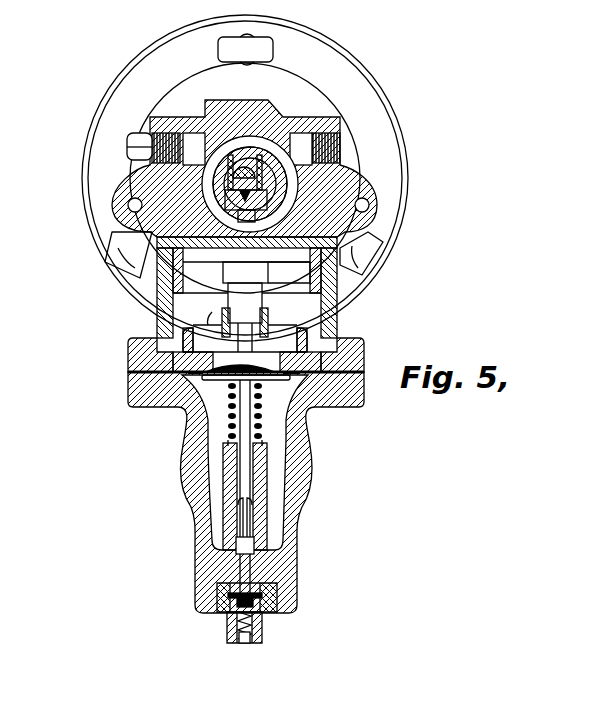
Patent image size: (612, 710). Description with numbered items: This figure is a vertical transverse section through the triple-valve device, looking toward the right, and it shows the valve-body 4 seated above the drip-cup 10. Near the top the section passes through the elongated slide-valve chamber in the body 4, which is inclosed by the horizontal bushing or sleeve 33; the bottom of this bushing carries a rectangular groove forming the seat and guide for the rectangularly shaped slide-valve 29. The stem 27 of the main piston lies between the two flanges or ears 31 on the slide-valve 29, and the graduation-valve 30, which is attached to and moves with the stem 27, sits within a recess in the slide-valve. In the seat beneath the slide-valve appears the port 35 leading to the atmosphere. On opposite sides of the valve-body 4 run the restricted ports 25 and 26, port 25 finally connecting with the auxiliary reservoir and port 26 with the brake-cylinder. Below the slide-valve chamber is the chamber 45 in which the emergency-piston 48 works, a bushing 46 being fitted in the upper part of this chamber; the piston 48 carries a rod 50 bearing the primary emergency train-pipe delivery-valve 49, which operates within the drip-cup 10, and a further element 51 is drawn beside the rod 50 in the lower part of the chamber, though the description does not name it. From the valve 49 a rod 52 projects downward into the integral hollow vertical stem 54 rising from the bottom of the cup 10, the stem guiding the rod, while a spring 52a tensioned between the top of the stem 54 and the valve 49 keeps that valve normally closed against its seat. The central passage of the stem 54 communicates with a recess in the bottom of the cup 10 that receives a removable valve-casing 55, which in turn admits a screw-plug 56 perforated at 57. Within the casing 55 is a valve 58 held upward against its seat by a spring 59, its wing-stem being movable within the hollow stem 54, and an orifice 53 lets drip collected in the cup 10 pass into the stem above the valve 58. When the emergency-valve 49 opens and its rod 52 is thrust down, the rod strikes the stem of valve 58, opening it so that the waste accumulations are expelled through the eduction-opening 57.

The body 4 is at (335, 320).
The drip-cup 10 is at (298, 519).
The port 25 is at (135, 208).
The port 26 is at (364, 205).
The stem of the main piston 27 is at (245, 172).
The slide-valve 29 is at (330, 150).
The graduation-valve 30 is at (285, 152).
The flanges or ears 31 is at (262, 160).
The bushing or sleeve 33 is at (277, 182).
The port 35 is at (163, 248).
The chamber 45 is at (291, 322).
The bushing 46 is at (311, 270).
The emergency-piston 48 is at (248, 250).
The primary emergency train-pipe delivery-valve 49 is at (223, 378).
The rod 50 is at (245, 317).
The chamber compartment 51 is at (222, 318).
The rod 52 is at (250, 402).
The spring 52a is at (231, 413).
The orifice 53 is at (256, 547).
The hollow vertical stem 54 is at (262, 471).
The removable valve-casing 55 is at (273, 586).
The screw-plug 56 is at (263, 637).
The perforation or eduction-opening 57 is at (247, 643).
The valve 58 is at (218, 606).
The spring 59 is at (233, 630).